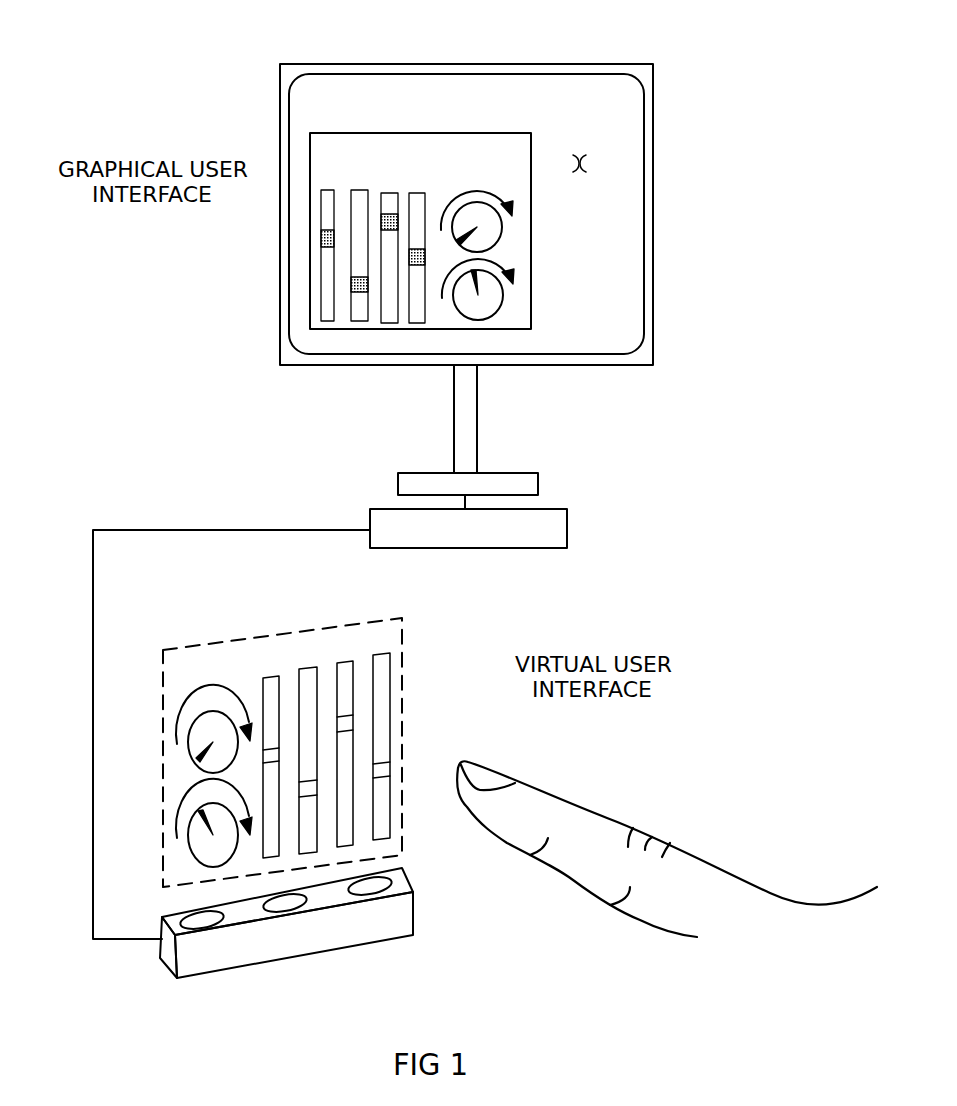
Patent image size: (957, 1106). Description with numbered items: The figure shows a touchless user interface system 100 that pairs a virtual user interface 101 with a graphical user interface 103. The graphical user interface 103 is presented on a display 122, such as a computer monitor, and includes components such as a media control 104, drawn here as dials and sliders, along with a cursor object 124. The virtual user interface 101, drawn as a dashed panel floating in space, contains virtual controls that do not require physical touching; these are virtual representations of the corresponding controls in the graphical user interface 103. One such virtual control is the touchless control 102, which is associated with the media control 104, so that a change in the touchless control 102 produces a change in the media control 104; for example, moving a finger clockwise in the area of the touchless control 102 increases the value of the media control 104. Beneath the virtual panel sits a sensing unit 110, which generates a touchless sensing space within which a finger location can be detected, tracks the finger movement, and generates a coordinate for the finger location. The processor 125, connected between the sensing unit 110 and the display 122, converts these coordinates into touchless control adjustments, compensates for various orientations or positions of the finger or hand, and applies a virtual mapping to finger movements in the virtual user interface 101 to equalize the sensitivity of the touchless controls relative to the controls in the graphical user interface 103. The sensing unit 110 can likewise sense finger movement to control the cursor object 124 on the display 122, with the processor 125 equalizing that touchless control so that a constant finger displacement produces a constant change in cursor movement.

The touchless user interface system 100 is at (815, 79).
The virtual user interface 101 is at (313, 628).
The touchless control 102 is at (198, 695).
The graphical user interface 103 is at (452, 132).
The media control 104 is at (475, 188).
The sensing unit 110 is at (413, 895).
The display 122 is at (580, 365).
The cursor object 124 is at (573, 146).
The processor 125 is at (567, 527).